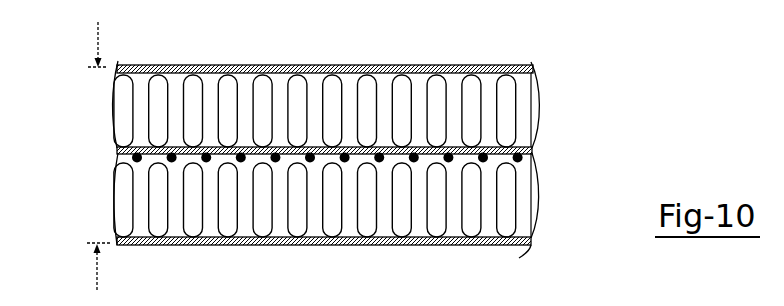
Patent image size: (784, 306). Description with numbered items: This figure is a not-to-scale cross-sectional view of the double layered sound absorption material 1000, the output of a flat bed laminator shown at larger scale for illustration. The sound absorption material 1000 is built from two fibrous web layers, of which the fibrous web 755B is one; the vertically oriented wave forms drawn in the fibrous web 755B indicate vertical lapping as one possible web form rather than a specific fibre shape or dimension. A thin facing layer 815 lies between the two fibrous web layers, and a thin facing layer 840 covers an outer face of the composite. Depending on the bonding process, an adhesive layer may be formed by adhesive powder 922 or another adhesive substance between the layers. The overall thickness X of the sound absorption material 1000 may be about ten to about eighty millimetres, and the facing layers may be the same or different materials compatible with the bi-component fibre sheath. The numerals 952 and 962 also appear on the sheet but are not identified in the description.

The double layered sound absorption material 1000 is at (322, 53).
The thin facing layer 840 is at (243, 65).
The thin facing layer 815 is at (118, 149).
The lower plate 952 is at (203, 246).
The fibrous web 755B is at (513, 118).
The adhesive powder 922 is at (134, 156).
The layer 962 is at (633, 1).